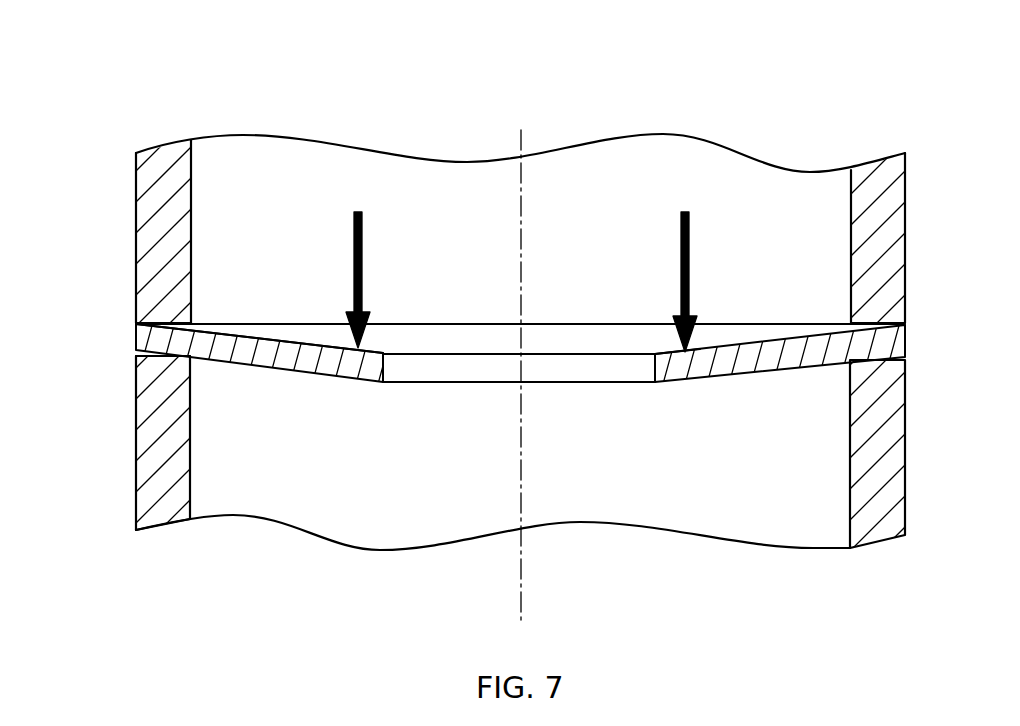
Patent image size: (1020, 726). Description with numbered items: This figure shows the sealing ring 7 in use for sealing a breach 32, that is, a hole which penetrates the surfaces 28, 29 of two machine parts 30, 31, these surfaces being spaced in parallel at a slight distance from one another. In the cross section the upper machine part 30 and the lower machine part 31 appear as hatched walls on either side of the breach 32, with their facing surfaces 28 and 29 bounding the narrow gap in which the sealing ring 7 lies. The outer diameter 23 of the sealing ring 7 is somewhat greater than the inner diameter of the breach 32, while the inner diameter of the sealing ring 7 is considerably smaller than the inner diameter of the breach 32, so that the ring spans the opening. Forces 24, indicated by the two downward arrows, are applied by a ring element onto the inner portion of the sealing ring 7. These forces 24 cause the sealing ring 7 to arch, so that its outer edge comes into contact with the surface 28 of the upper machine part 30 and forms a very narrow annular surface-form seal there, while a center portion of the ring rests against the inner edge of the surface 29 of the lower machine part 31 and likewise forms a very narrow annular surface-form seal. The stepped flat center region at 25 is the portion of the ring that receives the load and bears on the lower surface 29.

The sealing ring 7 is at (413, 368).
The outer diameter 23 is at (134, 334).
The forces 24 is at (363, 252).
The step edge 25 is at (652, 375).
The surface 28 is at (155, 323).
The surface 29 is at (157, 362).
The machine part 30 is at (172, 186).
The machine part 31 is at (173, 470).
The breach 32 is at (235, 168).